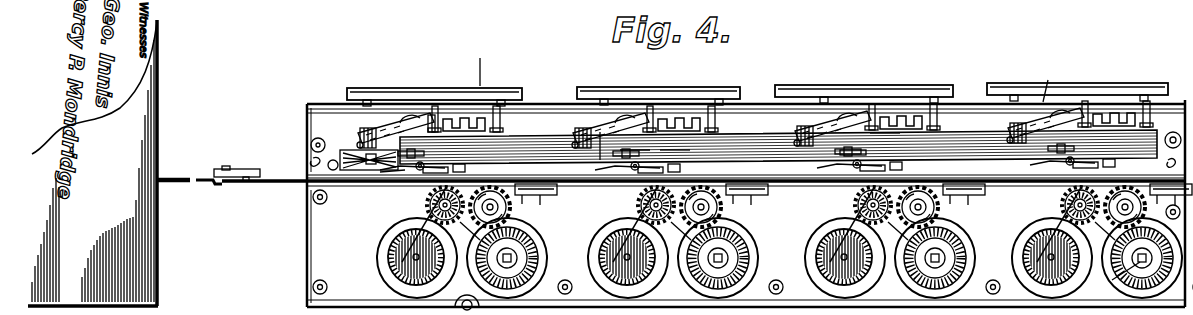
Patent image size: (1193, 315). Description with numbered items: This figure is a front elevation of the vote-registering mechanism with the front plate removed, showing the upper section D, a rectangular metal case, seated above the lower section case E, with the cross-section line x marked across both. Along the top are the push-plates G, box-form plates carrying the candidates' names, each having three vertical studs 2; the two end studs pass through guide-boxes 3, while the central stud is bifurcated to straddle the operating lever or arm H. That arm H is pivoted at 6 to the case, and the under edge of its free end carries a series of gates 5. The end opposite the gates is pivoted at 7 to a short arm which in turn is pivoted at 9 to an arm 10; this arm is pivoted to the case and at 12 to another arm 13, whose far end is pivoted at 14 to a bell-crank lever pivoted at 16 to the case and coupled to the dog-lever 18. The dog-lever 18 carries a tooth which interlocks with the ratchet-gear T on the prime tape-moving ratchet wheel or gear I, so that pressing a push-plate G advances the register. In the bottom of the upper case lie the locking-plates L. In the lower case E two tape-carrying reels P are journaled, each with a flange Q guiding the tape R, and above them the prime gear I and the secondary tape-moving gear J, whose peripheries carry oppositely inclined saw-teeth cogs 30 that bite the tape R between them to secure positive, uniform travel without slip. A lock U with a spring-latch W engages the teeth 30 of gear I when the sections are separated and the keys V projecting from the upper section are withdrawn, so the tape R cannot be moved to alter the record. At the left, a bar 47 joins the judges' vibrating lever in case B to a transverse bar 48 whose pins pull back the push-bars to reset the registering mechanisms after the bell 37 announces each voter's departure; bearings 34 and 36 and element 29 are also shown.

The case B is at (93, 163).
The upper section D is at (315, 128).
The lower section case E is at (310, 255).
The push-plates G is at (757, 81).
The operating lever or arm H is at (303, 183).
The locking-plates L is at (778, 147).
The ratchet-gear T is at (658, 146).
The tape-carrying reels P is at (753, 247).
The flange Q is at (1112, 280).
The tape R is at (709, 210).
The secondary tape-moving gear J is at (750, 237).
The prime tape-moving ratchet wheel or gear I is at (472, 214).
The lock U is at (874, 218).
The keys V is at (773, 236).
The spring-latch W is at (548, 191).
The section line x is at (478, 63).
The vertical studs 2 is at (398, 89).
The guide-boxes 3 is at (533, 124).
The gates 5 is at (1171, 189).
The pivot 6 is at (360, 183).
The pivot 7 is at (347, 93).
The pivot 9 is at (339, 183).
The arm 10 is at (368, 163).
The pivot 12 is at (400, 176).
The arm 13 is at (431, 102).
The pivot 14 is at (1049, 83).
The pivot 16 is at (676, 151).
The dog-lever 18 is at (885, 145).
The bolt 29 is at (853, 145).
The saw-teeth cogs 30 is at (778, 245).
The bearing 34 is at (499, 312).
The bearing 36 is at (701, 312).
The bell 37 is at (379, 312).
The bar 47 is at (187, 183).
The transverse bar 48 is at (236, 170).